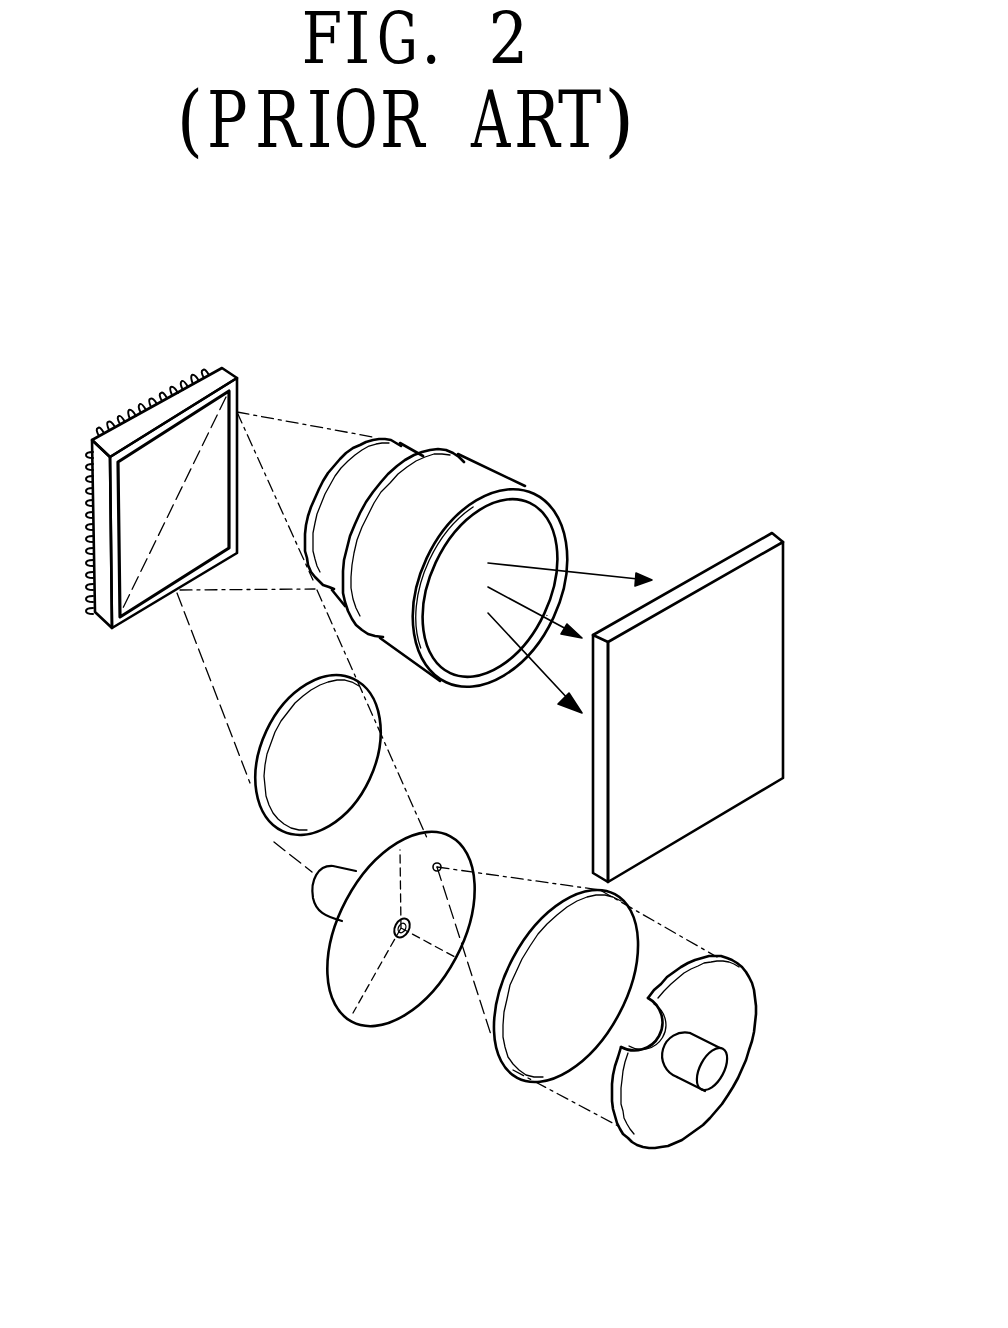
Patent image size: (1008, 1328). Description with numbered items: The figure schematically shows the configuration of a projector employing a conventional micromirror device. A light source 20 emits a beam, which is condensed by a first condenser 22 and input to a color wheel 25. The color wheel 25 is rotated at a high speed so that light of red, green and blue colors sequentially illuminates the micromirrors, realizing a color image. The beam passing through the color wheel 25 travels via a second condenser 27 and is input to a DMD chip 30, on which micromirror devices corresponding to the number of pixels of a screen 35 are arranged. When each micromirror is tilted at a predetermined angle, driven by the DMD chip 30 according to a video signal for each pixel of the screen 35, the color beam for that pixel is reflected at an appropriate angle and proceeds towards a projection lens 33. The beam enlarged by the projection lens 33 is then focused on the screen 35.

The light source 20 is at (652, 1127).
The first condenser 22 is at (520, 1048).
The color wheel 25 is at (343, 993).
The second condenser 27 is at (250, 785).
The DMD chip 30 is at (103, 578).
The projection lens 33 is at (483, 470).
The screen 35 is at (755, 600).